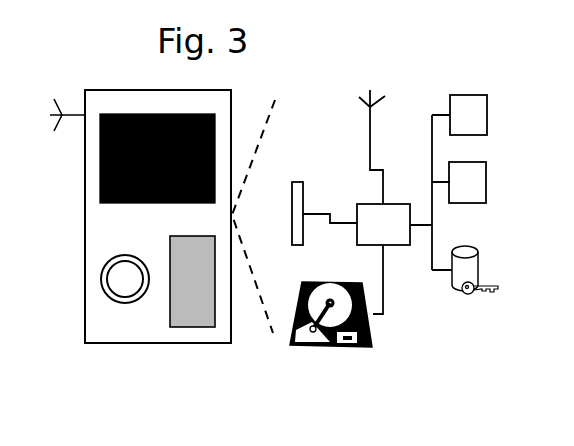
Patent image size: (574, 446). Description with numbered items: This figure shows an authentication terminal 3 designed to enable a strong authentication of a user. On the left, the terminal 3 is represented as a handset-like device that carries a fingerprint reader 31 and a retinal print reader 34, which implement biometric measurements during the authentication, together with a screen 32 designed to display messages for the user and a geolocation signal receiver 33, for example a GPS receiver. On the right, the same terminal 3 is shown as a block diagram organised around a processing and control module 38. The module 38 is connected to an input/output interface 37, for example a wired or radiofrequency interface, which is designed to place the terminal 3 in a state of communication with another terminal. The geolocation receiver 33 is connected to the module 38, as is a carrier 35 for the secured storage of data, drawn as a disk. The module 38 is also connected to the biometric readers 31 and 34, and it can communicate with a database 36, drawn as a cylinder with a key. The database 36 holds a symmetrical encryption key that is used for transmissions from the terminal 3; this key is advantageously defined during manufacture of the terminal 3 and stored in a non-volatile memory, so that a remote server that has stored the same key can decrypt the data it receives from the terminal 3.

The authentication terminal 3 is at (139, 343).
The fingerprint reader 31 is at (192, 327).
The screen 32 is at (100, 158).
The geolocation signal receiver 33 is at (62, 115).
The retinal print reader 34 is at (101, 279).
The carrier for the secured storage of data 35 is at (330, 347).
The database 36 is at (465, 295).
The input/output interface 37 is at (298, 182).
The processing and control module 38 is at (394, 259).